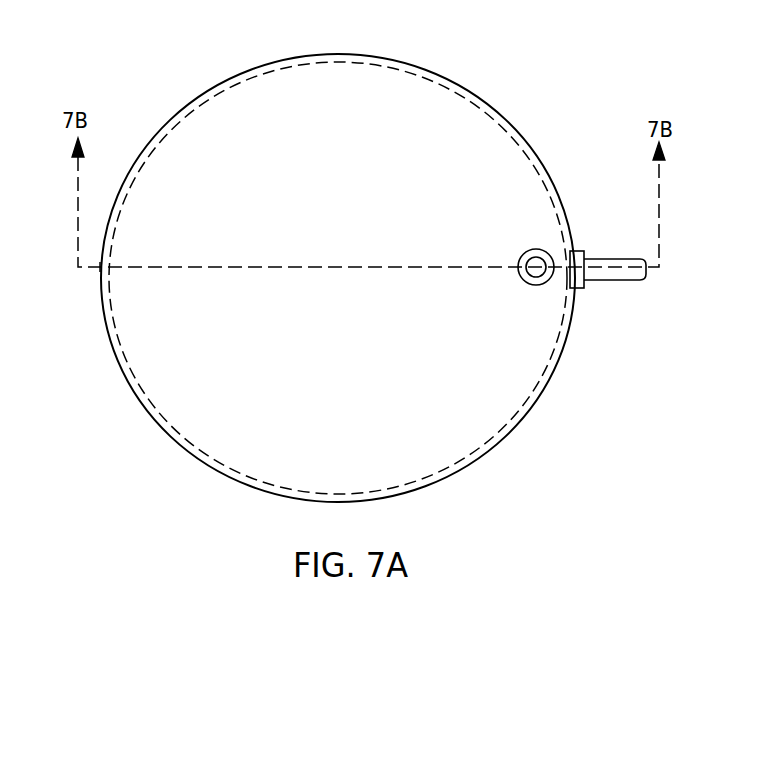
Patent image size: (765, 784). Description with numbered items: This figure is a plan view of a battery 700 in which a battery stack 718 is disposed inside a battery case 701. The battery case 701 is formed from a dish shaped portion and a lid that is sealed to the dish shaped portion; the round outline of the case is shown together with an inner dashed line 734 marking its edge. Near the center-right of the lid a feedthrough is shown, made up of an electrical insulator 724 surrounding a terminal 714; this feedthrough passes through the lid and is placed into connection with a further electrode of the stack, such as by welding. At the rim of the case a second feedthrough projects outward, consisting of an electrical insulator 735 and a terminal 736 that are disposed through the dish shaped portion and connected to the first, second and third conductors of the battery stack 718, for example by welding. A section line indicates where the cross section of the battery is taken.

The fan blade assembly 700 is at (339, 271).
The battery case 701 is at (545, 383).
The inner ring edge 734 is at (512, 398).
The battery stack 718 is at (178, 355).
The terminal 714 is at (533, 249).
The electrical insulator 724 is at (521, 257).
The electrical insulator 735 is at (585, 252).
The terminal 736 is at (596, 281).